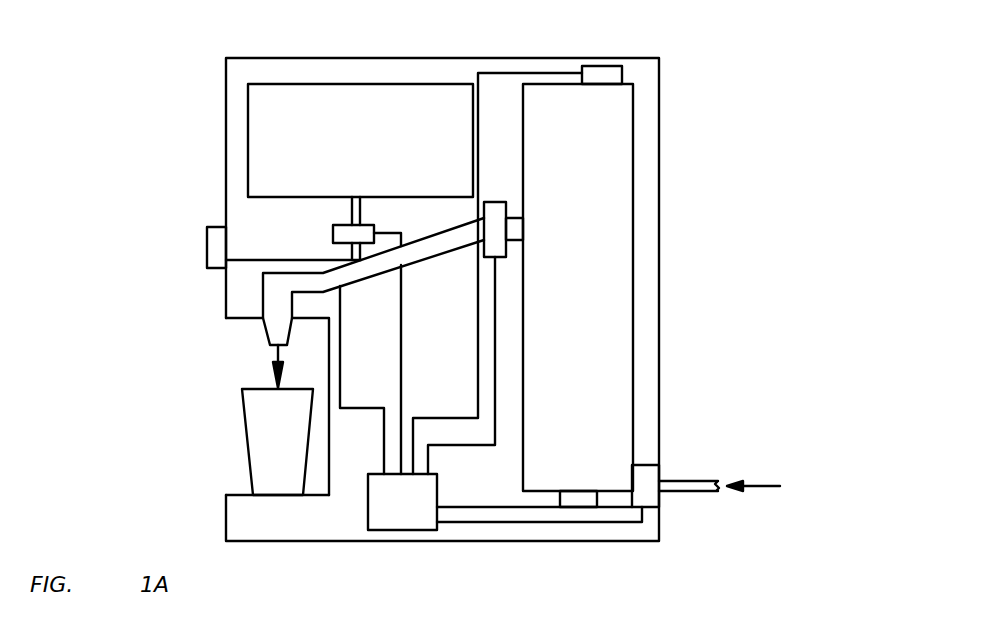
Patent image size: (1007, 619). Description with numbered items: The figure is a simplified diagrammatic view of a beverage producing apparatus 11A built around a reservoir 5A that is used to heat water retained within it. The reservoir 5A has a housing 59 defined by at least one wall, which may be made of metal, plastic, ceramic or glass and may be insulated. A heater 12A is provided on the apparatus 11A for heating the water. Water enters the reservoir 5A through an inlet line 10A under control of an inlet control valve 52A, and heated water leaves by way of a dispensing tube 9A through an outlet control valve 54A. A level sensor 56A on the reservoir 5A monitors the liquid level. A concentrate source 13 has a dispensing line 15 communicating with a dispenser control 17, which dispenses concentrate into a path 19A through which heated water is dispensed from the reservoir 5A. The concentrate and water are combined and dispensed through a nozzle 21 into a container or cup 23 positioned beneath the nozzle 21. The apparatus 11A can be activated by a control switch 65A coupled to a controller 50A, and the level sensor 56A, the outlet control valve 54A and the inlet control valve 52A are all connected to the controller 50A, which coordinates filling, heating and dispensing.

The reservoir 5A is at (560, 60).
The beverage producing apparatus 11A is at (176, 179).
The concentrate source 13 is at (257, 145).
The dispensing line 15 is at (352, 205).
The dispenser control 17 is at (333, 233).
The control switch 65A is at (207, 242).
The path 19A is at (375, 276).
The nozzle 21 is at (267, 335).
The cup 23 is at (248, 447).
The dispensing tube 9A is at (518, 218).
The outlet control valve 54A is at (507, 248).
The housing 59 is at (633, 308).
The level sensor 56A is at (622, 75).
The heater 12A is at (597, 497).
The inlet control valve 52A is at (653, 510).
The water inlet line 10A is at (682, 480).
The controller 50A is at (368, 516).